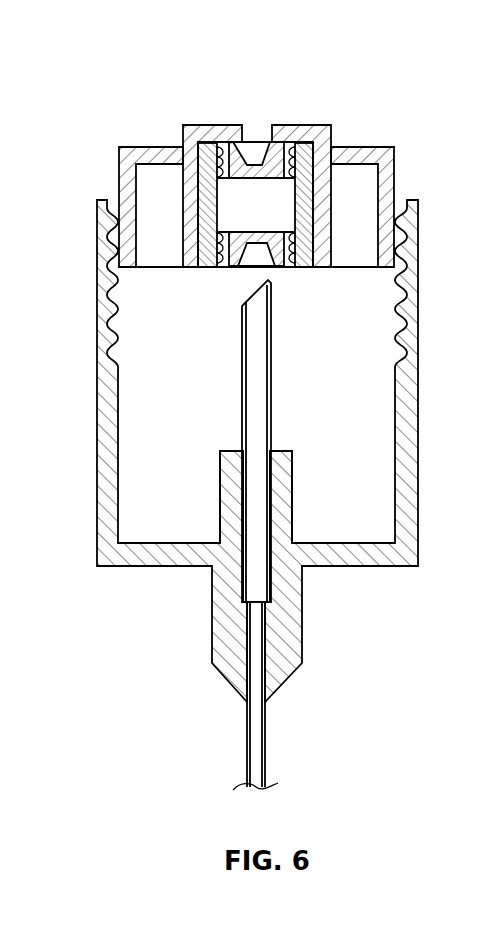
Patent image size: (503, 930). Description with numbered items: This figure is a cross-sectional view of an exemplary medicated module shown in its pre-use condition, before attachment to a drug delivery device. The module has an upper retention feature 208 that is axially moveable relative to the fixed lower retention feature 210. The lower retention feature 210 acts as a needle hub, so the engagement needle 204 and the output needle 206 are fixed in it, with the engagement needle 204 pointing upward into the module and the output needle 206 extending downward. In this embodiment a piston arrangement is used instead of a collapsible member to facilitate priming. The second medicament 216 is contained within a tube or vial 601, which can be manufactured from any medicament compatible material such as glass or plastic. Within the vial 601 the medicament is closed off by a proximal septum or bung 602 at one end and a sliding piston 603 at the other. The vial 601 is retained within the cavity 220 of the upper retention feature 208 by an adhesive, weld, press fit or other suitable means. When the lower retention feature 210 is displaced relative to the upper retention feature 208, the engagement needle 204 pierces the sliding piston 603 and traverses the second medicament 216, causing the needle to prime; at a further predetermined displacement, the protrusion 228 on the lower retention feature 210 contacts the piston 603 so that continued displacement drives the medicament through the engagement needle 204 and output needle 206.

The engagement needle 204 is at (271, 385).
The output needle 206 is at (268, 760).
The upper retention feature 208 is at (156, 146).
The lower retention feature 210 is at (290, 643).
The second medicament 216 is at (239, 190).
The cavity 220 is at (318, 240).
The protrusion 228 is at (285, 474).
The tube or vial 601 is at (303, 162).
The proximal septum or bung 602 is at (255, 167).
The sliding piston 603 is at (278, 252).